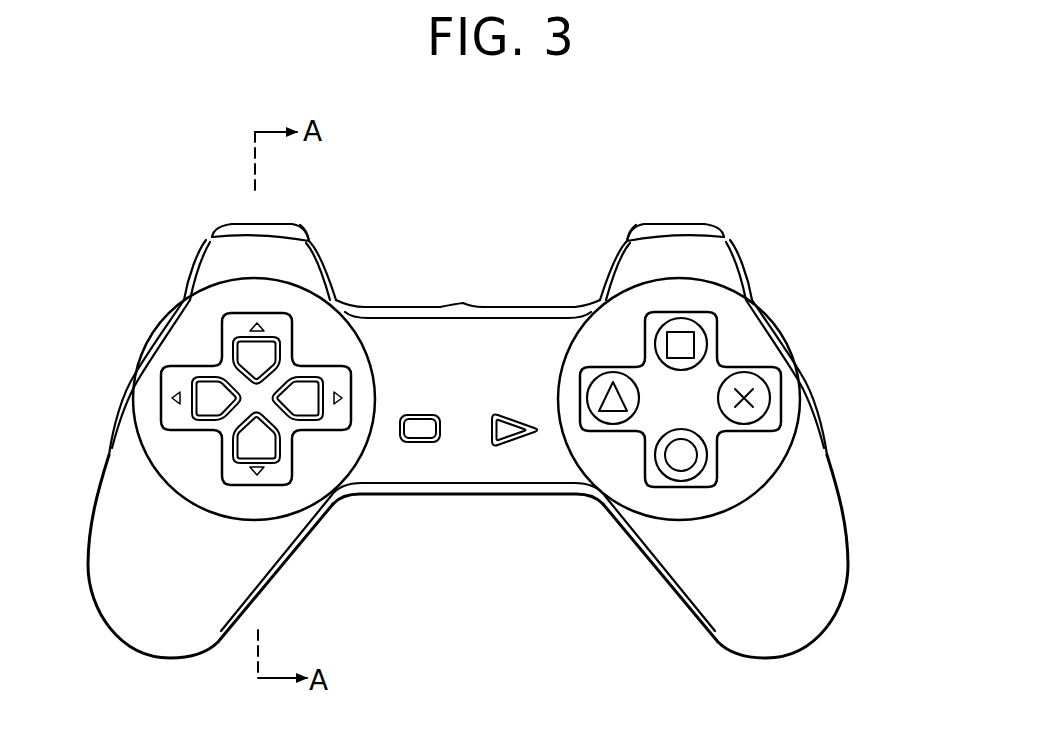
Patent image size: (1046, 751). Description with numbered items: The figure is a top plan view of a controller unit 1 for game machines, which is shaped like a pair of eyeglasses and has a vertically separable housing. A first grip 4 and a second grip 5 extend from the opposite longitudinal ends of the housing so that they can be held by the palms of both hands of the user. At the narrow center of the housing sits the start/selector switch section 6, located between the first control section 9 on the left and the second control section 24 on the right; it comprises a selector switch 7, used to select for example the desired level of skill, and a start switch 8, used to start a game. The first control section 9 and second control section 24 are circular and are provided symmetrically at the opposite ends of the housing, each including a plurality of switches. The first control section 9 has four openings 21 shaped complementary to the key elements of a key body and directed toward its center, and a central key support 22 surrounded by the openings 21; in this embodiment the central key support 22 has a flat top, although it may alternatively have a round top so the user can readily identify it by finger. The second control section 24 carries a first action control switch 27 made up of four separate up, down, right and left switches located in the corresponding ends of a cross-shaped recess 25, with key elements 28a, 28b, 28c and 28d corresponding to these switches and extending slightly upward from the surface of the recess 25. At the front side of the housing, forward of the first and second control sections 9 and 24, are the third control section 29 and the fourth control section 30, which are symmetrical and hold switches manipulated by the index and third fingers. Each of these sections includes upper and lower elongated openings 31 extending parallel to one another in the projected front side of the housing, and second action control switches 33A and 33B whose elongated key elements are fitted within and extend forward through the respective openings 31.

The controller unit 1 is at (488, 247).
The first grip 4 is at (218, 656).
The second grip 5 is at (713, 656).
The start/selector switch section 6 is at (470, 449).
The selector switch 7 is at (430, 413).
The start switch 8 is at (520, 412).
The first control section 9 is at (126, 347).
The openings 21 is at (240, 444).
The central key support 22 is at (262, 408).
The second control section 24 is at (788, 311).
The cross-shaped recess 25 is at (718, 432).
The first action control switch 27 is at (770, 369).
The key element 28a is at (688, 338).
The key element 28b is at (752, 398).
The key element 28c is at (703, 465).
The key element 28d is at (592, 402).
The third control section 29 is at (285, 212).
The fourth control section 30 is at (710, 214).
The elongated openings 31 is at (312, 240).
The second action control switch 33A is at (667, 233).
The second action control switch 33B is at (237, 233).